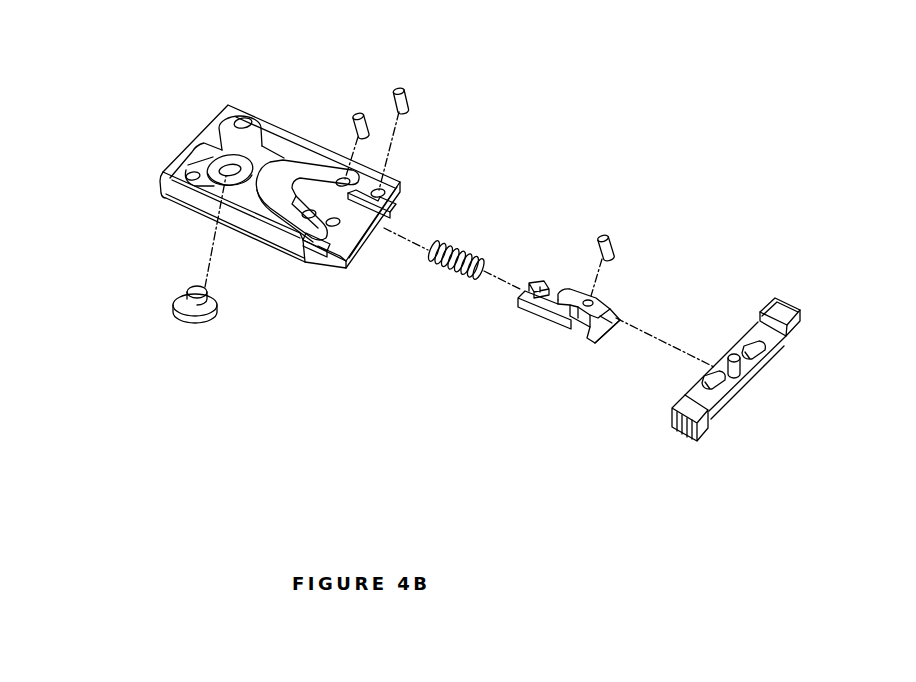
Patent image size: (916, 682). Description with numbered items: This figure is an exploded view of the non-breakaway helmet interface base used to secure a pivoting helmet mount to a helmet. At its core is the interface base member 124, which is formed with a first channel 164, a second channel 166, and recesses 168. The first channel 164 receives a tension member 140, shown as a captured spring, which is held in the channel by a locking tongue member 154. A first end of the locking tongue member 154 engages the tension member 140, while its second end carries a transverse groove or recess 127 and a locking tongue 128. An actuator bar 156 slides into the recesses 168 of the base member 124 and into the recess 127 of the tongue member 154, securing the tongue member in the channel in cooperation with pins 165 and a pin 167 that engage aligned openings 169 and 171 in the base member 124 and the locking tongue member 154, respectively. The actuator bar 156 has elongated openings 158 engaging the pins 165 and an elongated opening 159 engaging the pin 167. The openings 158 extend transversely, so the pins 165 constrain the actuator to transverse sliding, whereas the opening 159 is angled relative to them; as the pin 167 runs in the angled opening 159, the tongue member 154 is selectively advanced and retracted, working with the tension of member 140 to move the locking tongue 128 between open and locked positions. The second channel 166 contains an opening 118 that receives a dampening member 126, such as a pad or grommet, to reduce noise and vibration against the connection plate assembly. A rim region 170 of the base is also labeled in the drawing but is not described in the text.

The interface base member 124 is at (230, 113).
The opening 118 is at (229, 167).
The rim 170 is at (183, 145).
The pins 165 is at (402, 93).
The recesses 168 is at (395, 202).
The second channel 166 is at (252, 193).
The first channel 164 is at (320, 187).
The openings 169 is at (340, 258).
The dampening member 126 is at (177, 318).
The tension member 140 is at (470, 250).
The pin 167 is at (608, 240).
The locking tongue member 154 is at (598, 334).
The transverse groove or recess 127 is at (606, 312).
The locking tongue 128 is at (602, 337).
The opening 171 is at (590, 298).
The actuator bar 156 is at (785, 362).
The elongated openings 158 is at (764, 357).
The elongated opening 159 is at (740, 367).